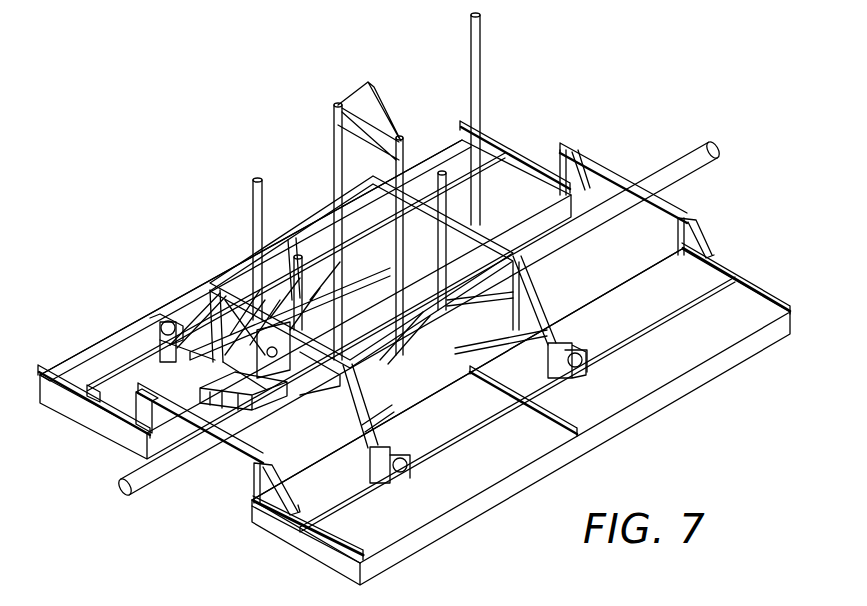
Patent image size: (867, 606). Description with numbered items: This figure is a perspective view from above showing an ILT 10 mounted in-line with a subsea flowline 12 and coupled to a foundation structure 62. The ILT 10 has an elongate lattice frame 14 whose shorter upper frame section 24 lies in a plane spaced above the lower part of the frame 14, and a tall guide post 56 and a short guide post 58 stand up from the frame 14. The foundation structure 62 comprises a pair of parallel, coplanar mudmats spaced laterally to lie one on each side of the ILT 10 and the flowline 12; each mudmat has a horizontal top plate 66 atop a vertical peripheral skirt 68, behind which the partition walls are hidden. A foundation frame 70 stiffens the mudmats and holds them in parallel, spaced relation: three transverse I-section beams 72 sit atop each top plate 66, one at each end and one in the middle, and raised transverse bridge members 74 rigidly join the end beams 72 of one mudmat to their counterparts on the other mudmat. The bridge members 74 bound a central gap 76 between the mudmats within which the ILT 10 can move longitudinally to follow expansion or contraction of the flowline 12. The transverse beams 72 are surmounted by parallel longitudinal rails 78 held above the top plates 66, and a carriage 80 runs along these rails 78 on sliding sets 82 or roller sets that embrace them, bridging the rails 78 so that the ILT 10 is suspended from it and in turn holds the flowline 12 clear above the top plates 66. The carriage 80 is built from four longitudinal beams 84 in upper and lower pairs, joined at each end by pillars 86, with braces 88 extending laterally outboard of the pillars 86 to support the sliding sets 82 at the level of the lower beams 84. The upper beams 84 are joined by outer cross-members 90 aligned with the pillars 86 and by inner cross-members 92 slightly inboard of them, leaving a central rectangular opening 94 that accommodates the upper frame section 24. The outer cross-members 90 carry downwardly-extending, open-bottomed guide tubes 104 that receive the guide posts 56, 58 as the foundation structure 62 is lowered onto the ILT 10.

The ILT 10 is at (492, 197).
The subsea flowline 12 is at (703, 150).
The elongate lattice frame 14 is at (493, 230).
The upper frame section 24 is at (300, 245).
The tall guide post 56 is at (482, 56).
The short guide post 58 is at (252, 197).
The foundation structure 62 is at (71, 336).
The top plate 66 is at (518, 146).
The peripheral skirt 68 is at (560, 212).
The foundation frame 70 is at (758, 240).
The transverse I-section beam 72 is at (490, 137).
The raised transverse bridge member 74 is at (695, 212).
The central gap 76 is at (224, 513).
The longitudinal rail 78 is at (140, 355).
The carriage 80 is at (315, 417).
The sliding set 82 is at (165, 320).
The longitudinal beam 84 is at (290, 240).
The pillar 86 is at (205, 300).
The brace 88 is at (195, 348).
The outer cross-member 90 is at (412, 182).
The inner cross-member 92 is at (385, 195).
The central rectangular opening 94 is at (412, 330).
The guide tube 104 is at (232, 380).